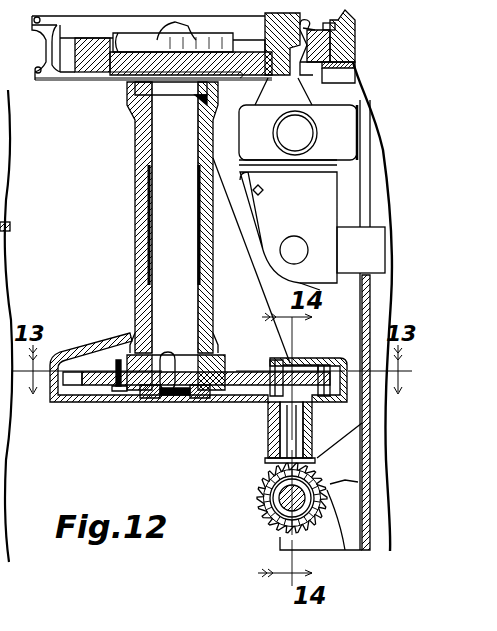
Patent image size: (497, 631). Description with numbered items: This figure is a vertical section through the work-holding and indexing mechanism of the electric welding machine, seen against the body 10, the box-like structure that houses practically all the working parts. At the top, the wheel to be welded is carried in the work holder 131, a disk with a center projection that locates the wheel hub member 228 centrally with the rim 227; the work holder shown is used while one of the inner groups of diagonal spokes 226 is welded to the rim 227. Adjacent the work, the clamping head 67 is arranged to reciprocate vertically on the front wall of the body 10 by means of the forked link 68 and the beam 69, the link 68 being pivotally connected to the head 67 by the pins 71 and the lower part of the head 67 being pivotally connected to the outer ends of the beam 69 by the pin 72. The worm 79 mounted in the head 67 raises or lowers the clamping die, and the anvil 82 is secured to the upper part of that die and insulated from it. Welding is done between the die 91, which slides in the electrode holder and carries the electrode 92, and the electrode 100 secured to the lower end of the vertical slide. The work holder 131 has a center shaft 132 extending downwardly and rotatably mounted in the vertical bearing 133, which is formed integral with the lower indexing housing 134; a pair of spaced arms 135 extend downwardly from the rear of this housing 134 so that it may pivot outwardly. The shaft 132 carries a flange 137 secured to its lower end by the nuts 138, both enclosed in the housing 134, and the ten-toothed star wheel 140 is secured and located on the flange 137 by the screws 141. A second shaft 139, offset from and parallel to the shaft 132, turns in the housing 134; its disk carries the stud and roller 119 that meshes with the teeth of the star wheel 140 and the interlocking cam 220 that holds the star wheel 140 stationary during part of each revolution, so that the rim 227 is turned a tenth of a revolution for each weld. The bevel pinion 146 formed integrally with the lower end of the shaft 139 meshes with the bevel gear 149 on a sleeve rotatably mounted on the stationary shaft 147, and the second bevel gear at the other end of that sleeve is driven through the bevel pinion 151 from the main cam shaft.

The body portion 10 is at (368, 550).
The clamping head 67 is at (252, 148).
The forked link 68 is at (304, 163).
The beam 69 is at (361, 250).
The pins 71 is at (295, 133).
The pin 72 is at (296, 252).
The worm 79 is at (264, 190).
The anvil 82 is at (283, 91).
The die 91 is at (340, 31).
The electrode 92 is at (347, 45).
The electrode 100 is at (268, 30).
The stud and roller 119 is at (325, 370).
The work holder 131 is at (96, 72).
The center shaft 132 is at (163, 212).
The vertical bearing 133 is at (140, 167).
The lower indexing housing 134 is at (93, 350).
The spaced arms 135 is at (268, 428).
The flange 137 is at (130, 335).
The nuts 138 is at (150, 400).
The second shaft 139 is at (285, 436).
The star wheel 140 is at (88, 388).
The screws 141 is at (120, 391).
The bevel pinion 146 is at (265, 464).
The stationary shaft 147 is at (279, 498).
The bevel gear 149 is at (268, 530).
The bevel pinion 151 is at (345, 550).
The interlocking cam 220 is at (275, 371).
The diagonal spokes 226 is at (352, 71).
The rim 227 is at (38, 70).
The wheel hub member 228 is at (165, 24).